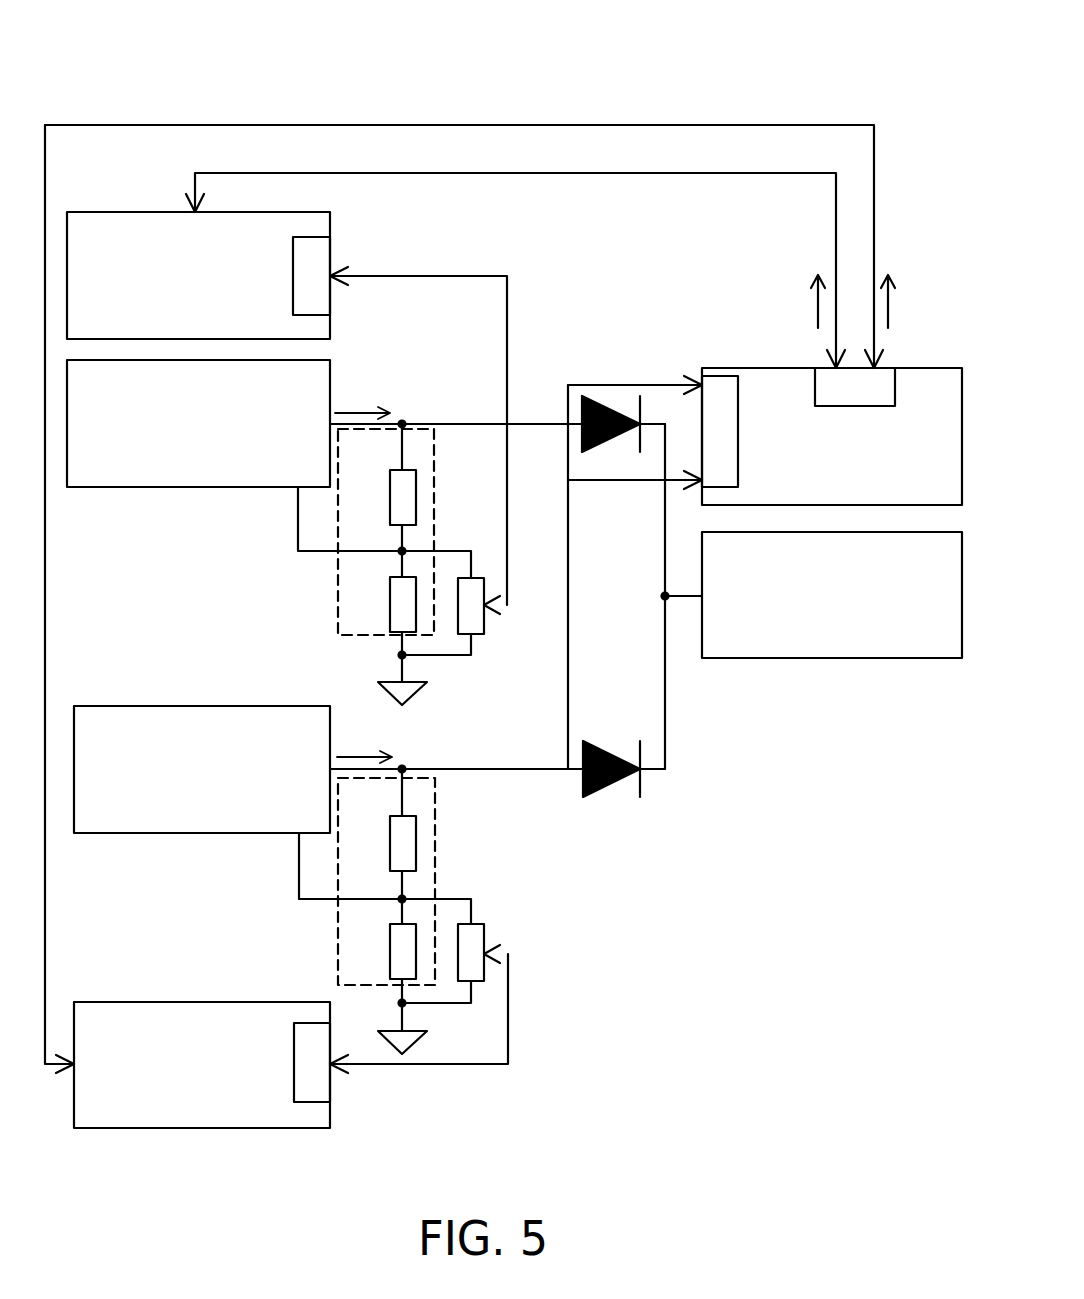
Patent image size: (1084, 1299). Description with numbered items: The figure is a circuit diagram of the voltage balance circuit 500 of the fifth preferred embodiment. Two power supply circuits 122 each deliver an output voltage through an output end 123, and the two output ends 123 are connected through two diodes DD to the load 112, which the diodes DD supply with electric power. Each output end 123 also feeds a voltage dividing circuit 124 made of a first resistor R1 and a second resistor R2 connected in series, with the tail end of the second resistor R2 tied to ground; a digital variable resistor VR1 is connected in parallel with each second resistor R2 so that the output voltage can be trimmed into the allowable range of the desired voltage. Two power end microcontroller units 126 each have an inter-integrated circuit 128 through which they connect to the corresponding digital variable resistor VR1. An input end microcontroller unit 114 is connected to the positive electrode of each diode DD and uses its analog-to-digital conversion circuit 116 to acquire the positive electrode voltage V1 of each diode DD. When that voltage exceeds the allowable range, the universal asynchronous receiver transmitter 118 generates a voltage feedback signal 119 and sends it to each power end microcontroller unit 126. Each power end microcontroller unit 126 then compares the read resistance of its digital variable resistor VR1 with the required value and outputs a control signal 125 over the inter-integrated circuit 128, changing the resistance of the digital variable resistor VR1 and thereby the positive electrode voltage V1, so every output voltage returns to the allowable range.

The voltage balance circuit 500 is at (47, 50).
The load 112 is at (828, 658).
The input end microcontroller unit 114 is at (760, 368).
The analog-to-digital (A/D) conversion circuit 116 is at (722, 375).
The universal asynchronous receiver transmitter 118 is at (880, 372).
The voltage feedback signal 119 is at (851, 301).
The power supply circuit 122 is at (197, 487).
The output end 123 is at (330, 424).
The voltage dividing circuit 124 is at (425, 739).
The control signal 125 is at (360, 265).
The power end microcontroller unit 126 is at (97, 212).
The inter-integrated circuit (I2C) 128 is at (328, 250).
The first resistor R1 is at (397, 473).
The second resistor R2 is at (397, 585).
The digital variable resistor VR1 is at (480, 625).
The positive electrode voltage V1 is at (568, 430).
The diode DD is at (630, 440).